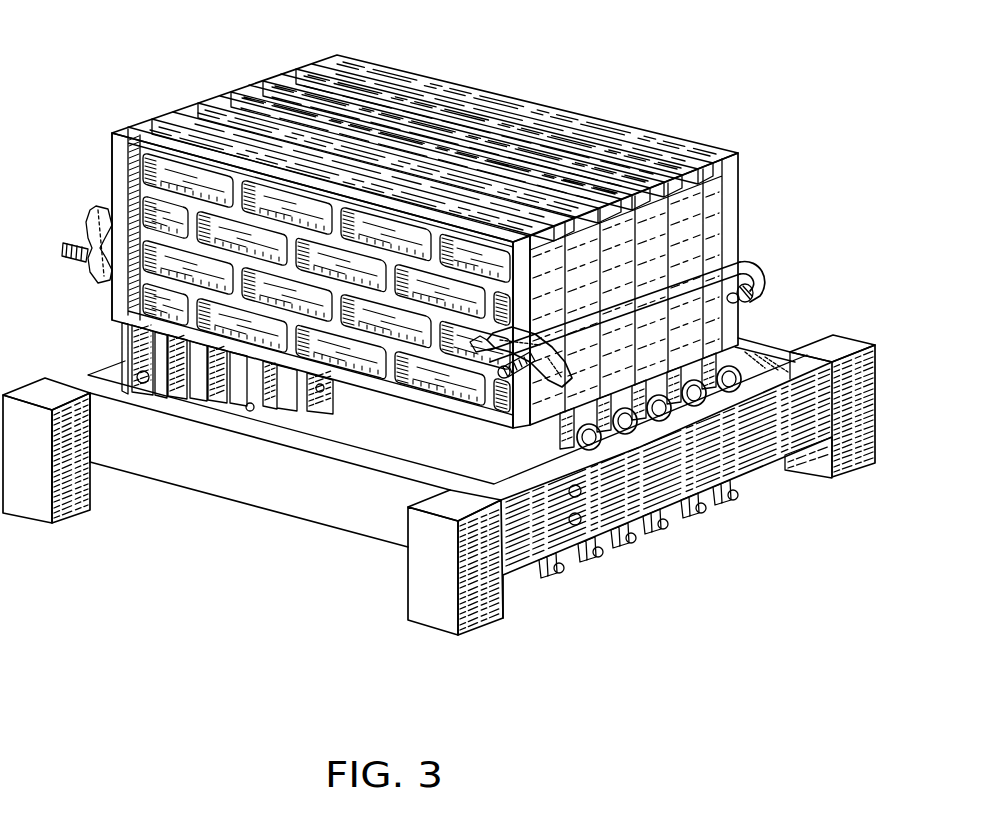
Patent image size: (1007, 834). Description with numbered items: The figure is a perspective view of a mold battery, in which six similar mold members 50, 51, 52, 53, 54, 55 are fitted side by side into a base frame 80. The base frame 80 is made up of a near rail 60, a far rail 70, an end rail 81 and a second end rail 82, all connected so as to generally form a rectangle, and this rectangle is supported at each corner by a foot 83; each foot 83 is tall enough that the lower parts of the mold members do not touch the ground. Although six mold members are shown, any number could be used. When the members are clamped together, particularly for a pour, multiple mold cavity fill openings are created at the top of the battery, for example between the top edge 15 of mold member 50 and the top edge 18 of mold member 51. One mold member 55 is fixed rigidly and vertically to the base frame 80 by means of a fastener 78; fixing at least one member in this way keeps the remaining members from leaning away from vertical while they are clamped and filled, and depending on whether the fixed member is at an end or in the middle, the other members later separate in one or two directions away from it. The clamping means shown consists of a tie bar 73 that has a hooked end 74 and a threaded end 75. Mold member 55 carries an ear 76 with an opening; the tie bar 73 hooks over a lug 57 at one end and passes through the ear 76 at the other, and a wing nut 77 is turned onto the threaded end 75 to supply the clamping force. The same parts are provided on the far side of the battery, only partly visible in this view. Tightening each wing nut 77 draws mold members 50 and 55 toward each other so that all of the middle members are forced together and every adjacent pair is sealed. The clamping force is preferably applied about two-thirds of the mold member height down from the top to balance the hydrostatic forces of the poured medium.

The top edge 15 is at (441, 229).
The top edge 18 is at (388, 97).
The mold member 50 is at (301, 52).
The mold member 51 is at (267, 67).
The mold member 52 is at (233, 83).
The mold member 53 is at (203, 102).
The mold member 54 is at (163, 118).
The mold member 55 is at (130, 128).
The lug 57 is at (760, 300).
The near rail 60 is at (735, 455).
The far rail 70 is at (439, 491).
The tie bar 73 is at (655, 303).
The hooked end 74 is at (752, 268).
The threaded end 75 is at (508, 376).
The ear 76 is at (548, 336).
The wing nut 77 is at (515, 363).
The fastener 78 is at (633, 518).
The base frame 80 is at (272, 494).
The end rail 81 is at (185, 488).
The end rail 82 is at (782, 344).
The foot 83 is at (435, 628).